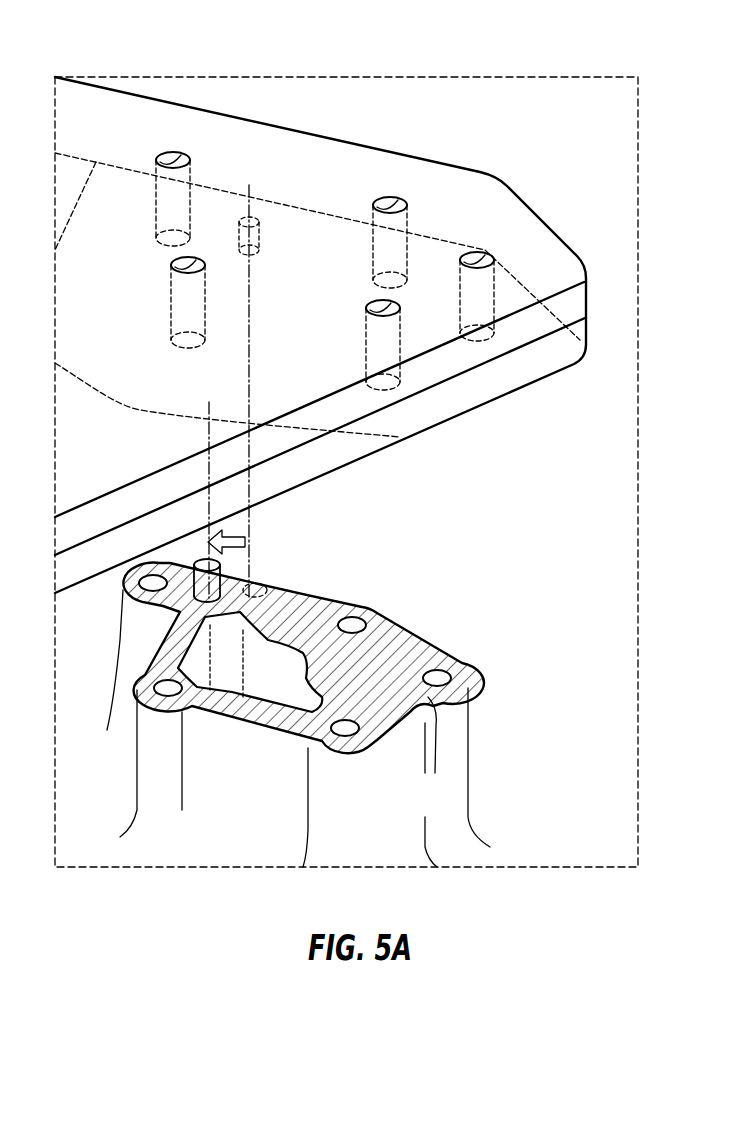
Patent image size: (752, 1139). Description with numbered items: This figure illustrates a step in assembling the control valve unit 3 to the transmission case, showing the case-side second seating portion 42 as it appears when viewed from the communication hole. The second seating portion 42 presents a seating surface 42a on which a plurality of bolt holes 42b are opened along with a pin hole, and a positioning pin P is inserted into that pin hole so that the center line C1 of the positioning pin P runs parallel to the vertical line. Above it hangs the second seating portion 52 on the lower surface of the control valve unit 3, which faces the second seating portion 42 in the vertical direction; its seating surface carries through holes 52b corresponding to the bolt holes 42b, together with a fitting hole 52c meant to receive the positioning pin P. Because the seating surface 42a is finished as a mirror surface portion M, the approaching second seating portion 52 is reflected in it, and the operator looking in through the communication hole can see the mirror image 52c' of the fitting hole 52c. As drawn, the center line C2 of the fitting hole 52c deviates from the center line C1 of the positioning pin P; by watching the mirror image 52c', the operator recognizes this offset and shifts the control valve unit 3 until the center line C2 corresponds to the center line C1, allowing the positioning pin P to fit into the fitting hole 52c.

The control valve unit 3 is at (535, 210).
The second seating portion 52 is at (468, 410).
The through holes 52b is at (172, 152).
The fitting hole 52c is at (300, 242).
The mirror image of the fitting hole 52c' is at (270, 552).
The center line of the positioning pin C1 is at (206, 479).
The center line of the fitting hole C2 is at (248, 370).
The mirror surface portion M is at (407, 662).
The positioning pin P is at (162, 604).
The second seating portion 42 is at (470, 748).
The seating surface 42a is at (426, 728).
The bolt holes 42b is at (147, 583).